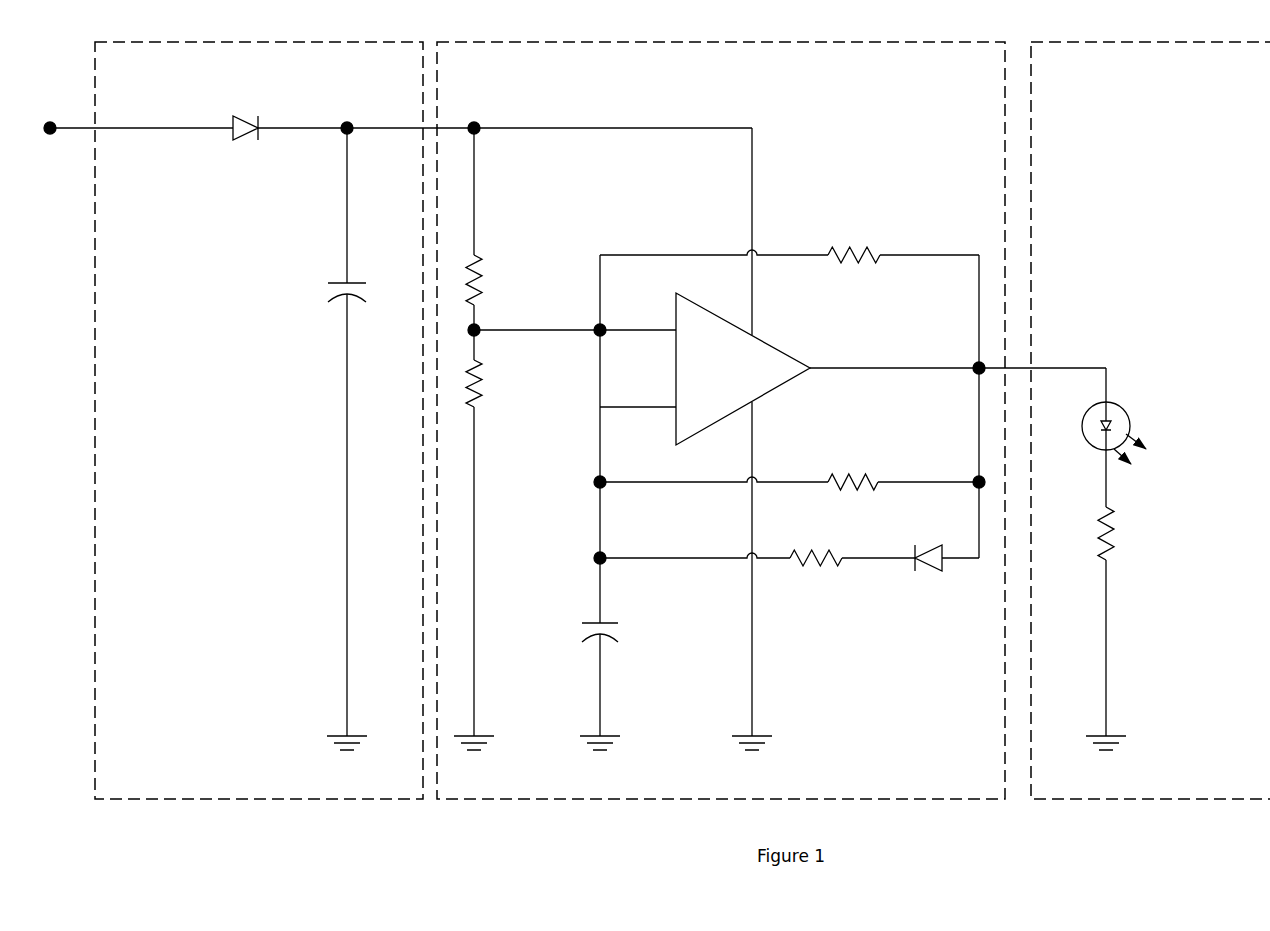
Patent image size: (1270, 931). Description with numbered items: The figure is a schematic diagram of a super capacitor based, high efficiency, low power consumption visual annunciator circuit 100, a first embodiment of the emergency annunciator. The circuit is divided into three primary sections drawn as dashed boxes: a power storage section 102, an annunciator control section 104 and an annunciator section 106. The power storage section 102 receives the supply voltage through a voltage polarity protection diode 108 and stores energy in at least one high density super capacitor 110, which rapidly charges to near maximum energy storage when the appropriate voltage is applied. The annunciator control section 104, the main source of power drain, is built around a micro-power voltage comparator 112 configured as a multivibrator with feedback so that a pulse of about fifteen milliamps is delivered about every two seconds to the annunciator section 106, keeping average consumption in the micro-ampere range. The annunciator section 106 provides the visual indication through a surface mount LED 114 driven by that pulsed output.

The visual annunciator circuit 100 is at (228, 816).
The power storage section 102 is at (284, 420).
The annunciator control section 104 is at (771, 420).
The annunciator section 106 is at (1150, 420).
The voltage polarity protection diode 108 is at (221, 165).
The high density capacitor 110 is at (320, 291).
The micro-power voltage comparator 112 is at (714, 305).
The LED 114 is at (1131, 405).